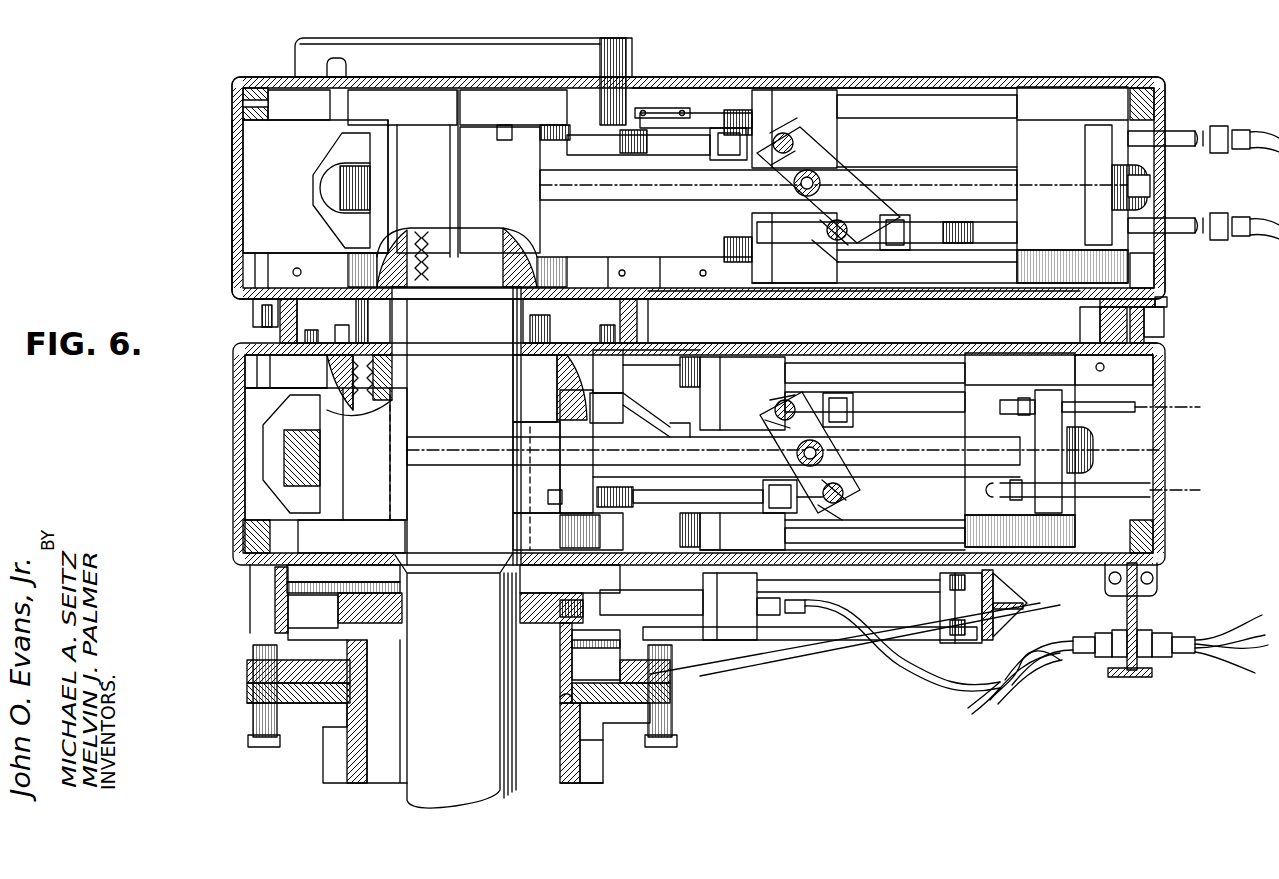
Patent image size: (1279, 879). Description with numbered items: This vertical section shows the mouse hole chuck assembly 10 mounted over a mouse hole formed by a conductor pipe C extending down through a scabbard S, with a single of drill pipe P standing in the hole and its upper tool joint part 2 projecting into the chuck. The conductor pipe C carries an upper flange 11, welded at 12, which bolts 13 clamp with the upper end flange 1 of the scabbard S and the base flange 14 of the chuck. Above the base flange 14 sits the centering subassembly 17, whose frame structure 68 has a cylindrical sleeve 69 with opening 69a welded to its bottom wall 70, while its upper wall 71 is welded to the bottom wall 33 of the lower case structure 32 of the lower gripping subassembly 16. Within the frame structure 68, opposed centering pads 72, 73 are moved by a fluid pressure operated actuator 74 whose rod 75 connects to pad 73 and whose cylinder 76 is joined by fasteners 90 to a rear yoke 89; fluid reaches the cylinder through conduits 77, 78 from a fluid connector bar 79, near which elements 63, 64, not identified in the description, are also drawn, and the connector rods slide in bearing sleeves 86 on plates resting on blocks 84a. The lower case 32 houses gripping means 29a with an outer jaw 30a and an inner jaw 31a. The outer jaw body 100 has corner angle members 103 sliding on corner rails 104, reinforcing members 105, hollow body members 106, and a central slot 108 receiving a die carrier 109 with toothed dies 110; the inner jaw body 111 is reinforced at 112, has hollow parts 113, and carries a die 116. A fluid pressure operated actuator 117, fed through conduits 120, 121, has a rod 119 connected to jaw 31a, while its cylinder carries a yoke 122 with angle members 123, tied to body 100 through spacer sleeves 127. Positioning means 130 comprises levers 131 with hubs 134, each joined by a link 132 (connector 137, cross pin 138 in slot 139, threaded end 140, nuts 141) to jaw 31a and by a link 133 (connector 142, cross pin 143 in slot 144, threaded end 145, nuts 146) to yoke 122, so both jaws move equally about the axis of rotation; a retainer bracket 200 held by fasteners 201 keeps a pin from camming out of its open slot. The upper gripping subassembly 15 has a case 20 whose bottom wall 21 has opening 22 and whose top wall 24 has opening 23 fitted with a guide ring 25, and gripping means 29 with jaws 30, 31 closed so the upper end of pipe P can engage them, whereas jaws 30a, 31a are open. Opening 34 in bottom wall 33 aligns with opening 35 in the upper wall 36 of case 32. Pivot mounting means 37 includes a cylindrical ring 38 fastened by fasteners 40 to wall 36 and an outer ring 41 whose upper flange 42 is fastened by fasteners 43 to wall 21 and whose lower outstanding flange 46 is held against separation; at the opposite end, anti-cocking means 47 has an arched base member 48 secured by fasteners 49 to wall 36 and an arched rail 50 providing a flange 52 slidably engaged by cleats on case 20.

The upper end flange 1 is at (678, 716).
The upper tool joint part 2 is at (456, 321).
The mouse hole chuck assembly 10 is at (220, 184).
The upper flange 11 is at (252, 693).
The weld 12 is at (560, 698).
The bolts 13 is at (262, 735).
The base flange 14 is at (252, 668).
The upper gripping subassembly 15 is at (783, 77).
The lower gripping subassembly 16 is at (232, 459).
The centering subassembly 17 is at (243, 594).
The case structure 20 is at (872, 77).
The bottom wall 21 is at (828, 292).
The opening 22 is at (325, 340).
The opening 23 is at (325, 62).
The top wall 24 is at (710, 82).
The guide ring 25 is at (330, 38).
The gripping means 29 is at (270, 224).
The gripping means 29a is at (262, 503).
The jaw 30 is at (397, 235).
The jaw 30a is at (345, 373).
The jaw 31 is at (518, 238).
The jaw 31a is at (560, 380).
The case structure 32 is at (895, 298).
The bottom wall 33 is at (828, 565).
The opening 34 is at (560, 520).
The opening 35 is at (365, 352).
The upper wall 36 is at (718, 342).
The mounting means 37 is at (242, 329).
The cylindrical ring member 38 is at (612, 323).
The fasteners 40 is at (312, 295).
The outer cylindrical ring member 41 is at (650, 332).
The upper end flange 42 is at (645, 290).
The fasteners 43 is at (660, 268).
The outstanding flange 46 is at (270, 340).
The holding means 47 is at (1173, 339).
The arched base member 48 is at (1160, 325).
The fasteners 49 is at (1105, 330).
The arched rail 50 is at (1108, 300).
The outstanding flange 52 is at (1160, 303).
The hose 63 is at (1010, 696).
The hose 64 is at (985, 700).
The frame structure 68 is at (290, 575).
The cylindrical sleeve 69 is at (565, 652).
The opening 69a is at (407, 671).
The bottom wall 70 is at (313, 611).
The upper wall 71 is at (283, 600).
The centering pad 72 is at (400, 608).
The centering pad 73 is at (540, 607).
The fluid pressure operated actuator 74 is at (815, 640).
The rod 75 is at (700, 622).
The cylinder 76 is at (950, 635).
The conduit 77 is at (905, 675).
The conduit 78 is at (1055, 660).
The fluid connector bar 79 is at (1131, 678).
The blocks 84a is at (770, 663).
The bearing sleeves 86 is at (690, 586).
The yoke 89 is at (1000, 592).
The fasteners 90 is at (950, 590).
The jaw body 100 is at (330, 218).
The angle members 103 is at (420, 107).
The corner rails 104 is at (290, 112).
The reinforcing members 105 is at (318, 152).
The hollow body members 106 is at (430, 156).
The slot 108 is at (352, 402).
The die carrier 109 is at (362, 396).
The toothed dies 110 is at (405, 225).
The jaw body 111 is at (590, 441).
The reinforcement 112 is at (645, 391).
The hollow parts 113 is at (492, 171).
The toothed die 116 is at (505, 262).
The fluid pressure operated actuator 117 is at (932, 520).
The rod 119 is at (640, 400).
The conduit 120 is at (1180, 135).
The conduit 121 is at (1180, 225).
The yoke 122 is at (1090, 138).
The angle members 123 is at (1065, 268).
The spacer sleeve 127 is at (464, 432).
The positioning means 130 is at (855, 525).
The lever 131 is at (840, 196).
The link 132 is at (698, 152).
The link 133 is at (978, 235).
The hub 134 is at (794, 184).
The connector 137 is at (772, 132).
The cross pin 138 is at (795, 138).
The elongated slot 139 is at (795, 152).
The threaded end 140 is at (555, 132).
The nuts 141 is at (500, 135).
The connector 142 is at (902, 216).
The cross pin 143 is at (845, 238).
The elongated slot 144 is at (825, 233).
The threaded end 145 is at (1070, 205).
The nuts 146 is at (1035, 405).
The retainer bracket 200 is at (700, 112).
The fasteners 201 is at (640, 113).
The drill pipe single P is at (396, 711).
The scabbard S is at (600, 760).
The conductor pipe C is at (572, 785).